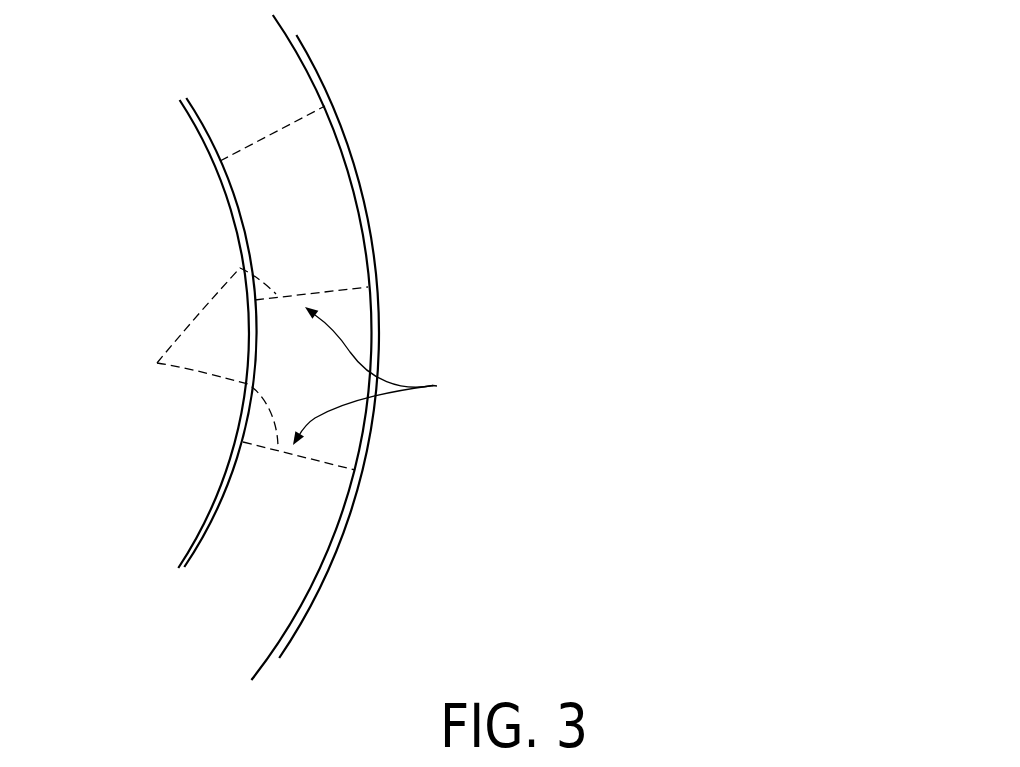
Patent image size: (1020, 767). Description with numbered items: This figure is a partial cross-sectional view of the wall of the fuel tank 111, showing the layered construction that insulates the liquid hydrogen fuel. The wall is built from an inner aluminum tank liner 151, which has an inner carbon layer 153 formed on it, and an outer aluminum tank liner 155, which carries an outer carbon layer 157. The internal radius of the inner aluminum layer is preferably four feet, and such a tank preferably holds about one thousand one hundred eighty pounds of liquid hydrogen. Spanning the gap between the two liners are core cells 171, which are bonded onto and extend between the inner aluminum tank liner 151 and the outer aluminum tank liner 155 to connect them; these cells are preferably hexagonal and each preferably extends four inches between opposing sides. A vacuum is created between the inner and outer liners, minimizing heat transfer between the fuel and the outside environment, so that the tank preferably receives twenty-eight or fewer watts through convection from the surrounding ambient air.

The tank wall 111 is at (153, 208).
The inner aluminum tank liner 151 is at (211, 126).
The inner carbon layer 153 is at (243, 192).
The outer aluminum tank liner 155 is at (374, 231).
The outer carbon layer 157 is at (391, 285).
The core cells 171 is at (157, 362).